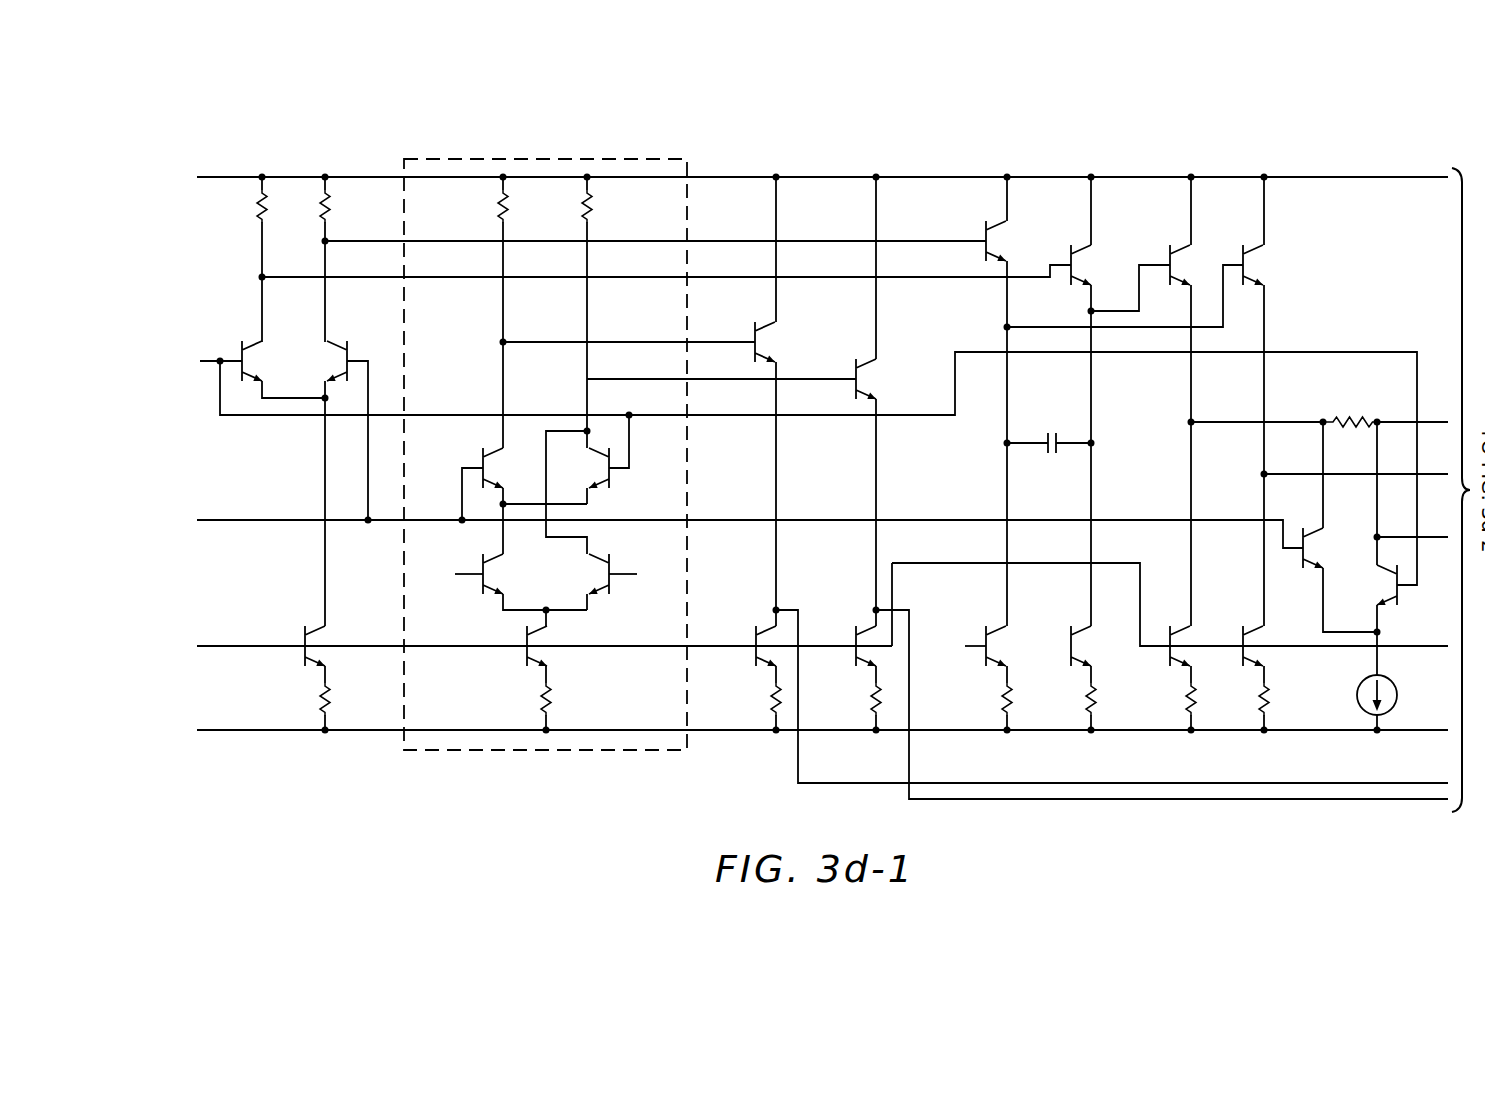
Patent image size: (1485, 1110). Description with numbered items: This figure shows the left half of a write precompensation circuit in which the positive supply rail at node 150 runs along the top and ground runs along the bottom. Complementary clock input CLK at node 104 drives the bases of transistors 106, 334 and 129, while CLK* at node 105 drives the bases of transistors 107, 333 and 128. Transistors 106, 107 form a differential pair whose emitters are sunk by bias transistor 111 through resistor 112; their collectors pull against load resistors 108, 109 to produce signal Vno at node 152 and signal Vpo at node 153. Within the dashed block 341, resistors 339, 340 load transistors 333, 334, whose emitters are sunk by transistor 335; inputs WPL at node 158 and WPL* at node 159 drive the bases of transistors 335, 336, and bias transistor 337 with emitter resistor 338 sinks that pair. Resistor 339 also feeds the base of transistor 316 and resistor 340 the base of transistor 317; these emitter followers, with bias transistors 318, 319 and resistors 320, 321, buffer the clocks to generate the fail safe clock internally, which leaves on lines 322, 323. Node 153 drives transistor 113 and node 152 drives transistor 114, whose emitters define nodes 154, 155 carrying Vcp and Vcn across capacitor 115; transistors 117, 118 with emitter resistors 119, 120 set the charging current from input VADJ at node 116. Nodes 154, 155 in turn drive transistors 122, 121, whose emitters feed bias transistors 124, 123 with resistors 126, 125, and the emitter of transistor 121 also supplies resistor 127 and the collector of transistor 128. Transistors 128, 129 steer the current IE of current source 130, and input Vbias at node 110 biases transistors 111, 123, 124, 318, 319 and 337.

The node 104 is at (220, 372).
The node 105 is at (278, 523).
The transistor 106 is at (241, 345).
The transistor 107 is at (348, 345).
The resistor 108 is at (256, 210).
The resistor 109 is at (331, 210).
The node 110 is at (280, 644).
The transistor 111 is at (305, 662).
The resistor 112 is at (318, 698).
The transistor 113 is at (984, 230).
The transistor 114 is at (1073, 248).
The capacitor 115 is at (1052, 430).
The node 116 is at (982, 640).
The transistor 117 is at (985, 662).
The transistor 118 is at (1073, 628).
The resistor 119 is at (1000, 698).
The resistor 120 is at (1085, 698).
The transistor 121 is at (1173, 248).
The transistor 122 is at (1245, 248).
The transistor 123 is at (1173, 628).
The transistor 124 is at (1245, 628).
The resistor 125 is at (1185, 698).
The resistor 126 is at (1272, 700).
The resistor 127 is at (1340, 418).
The transistor 128 is at (1305, 532).
The transistor 129 is at (1400, 604).
The current source 130 is at (1355, 700).
The node 150 is at (1365, 176).
The node 152 is at (260, 265).
The node 153 is at (322, 262).
The node 154 is at (1005, 500).
The node 155 is at (1094, 500).
The node 158 is at (470, 578).
The node 159 is at (626, 578).
The transistor 316 is at (753, 325).
The transistor 317 is at (858, 362).
The transistor 318 is at (758, 628).
The transistor 319 is at (858, 628).
The resistor 320 is at (770, 698).
The resistor 321 is at (870, 698).
The output line 322 is at (797, 760).
The output line 323 is at (911, 772).
The transistor 333 is at (480, 455).
The transistor 334 is at (613, 488).
The transistor 335 is at (480, 560).
The transistor 336 is at (613, 560).
The transistor 337 is at (525, 662).
The resistor 338 is at (540, 698).
The resistor 339 is at (497, 210).
The resistor 340 is at (593, 210).
The write pulse circuit block 341 is at (548, 752).